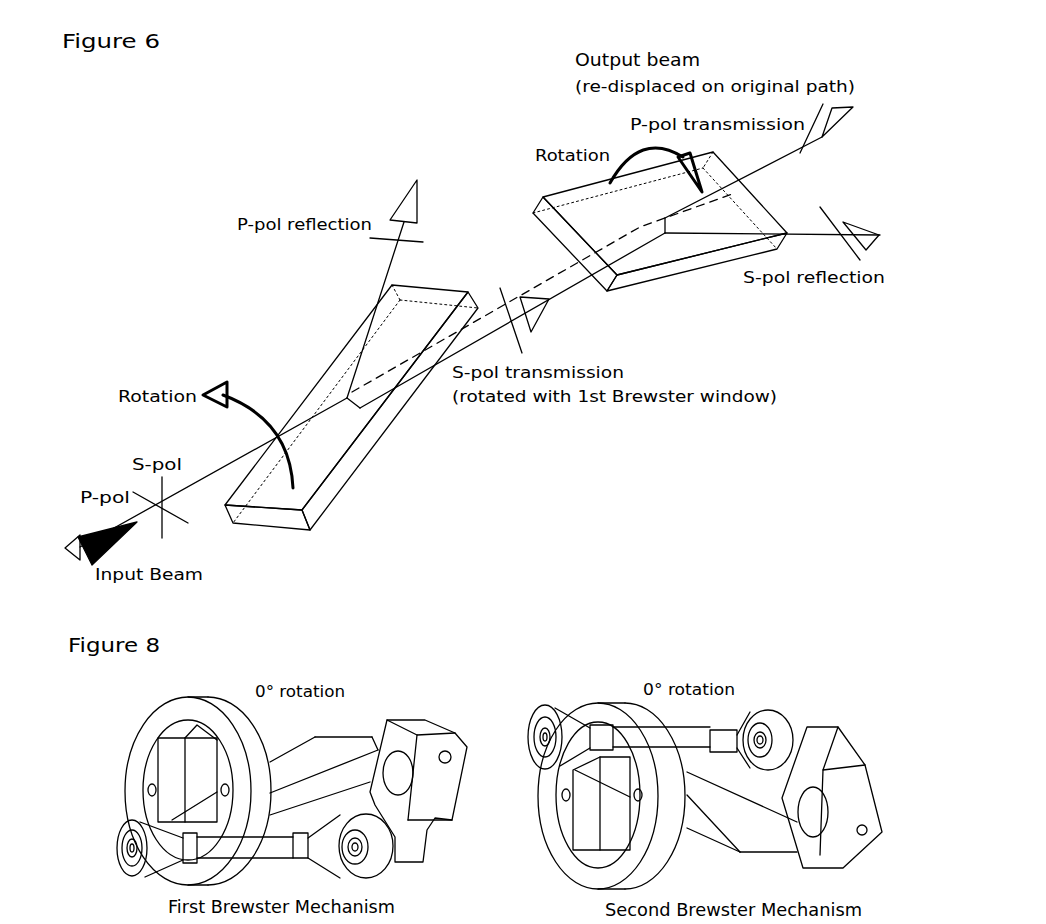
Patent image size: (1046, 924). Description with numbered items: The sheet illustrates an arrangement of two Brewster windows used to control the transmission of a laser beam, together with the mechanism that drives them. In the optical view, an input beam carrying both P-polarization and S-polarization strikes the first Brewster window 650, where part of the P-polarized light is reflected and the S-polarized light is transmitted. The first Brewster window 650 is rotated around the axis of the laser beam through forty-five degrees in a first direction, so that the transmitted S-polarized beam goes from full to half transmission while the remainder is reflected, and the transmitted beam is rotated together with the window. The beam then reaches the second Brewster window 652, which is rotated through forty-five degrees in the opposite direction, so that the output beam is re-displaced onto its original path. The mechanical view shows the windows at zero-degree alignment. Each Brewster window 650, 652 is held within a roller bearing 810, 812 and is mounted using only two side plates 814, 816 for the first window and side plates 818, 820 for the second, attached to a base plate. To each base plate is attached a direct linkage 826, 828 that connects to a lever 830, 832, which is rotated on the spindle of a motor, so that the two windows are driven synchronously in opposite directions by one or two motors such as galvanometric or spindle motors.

In FIG. 6, the first Brewster window 650 is at (372, 433).
In FIG. 8, the first Brewster window 650 is at (340, 745).
In FIG. 6, the second Brewster window 652 is at (668, 270).
In FIG. 8, the second Brewster window 652 is at (756, 842).
In FIG. 8, the roller bearing 810 is at (140, 759).
In FIG. 8, the roller bearing 812 is at (550, 793).
In FIG. 8, the side plate 814 is at (150, 806).
In FIG. 8, the side plate 816 is at (225, 770).
In FIG. 8, the side plate 818 is at (570, 833).
In FIG. 8, the side plate 820 is at (640, 818).
In FIG. 8, the direct linkage 826 is at (148, 872).
In FIG. 8, the direct linkage 828 is at (573, 718).
In FIG. 8, the lever 830 is at (265, 845).
In FIG. 8, the lever 832 is at (680, 733).